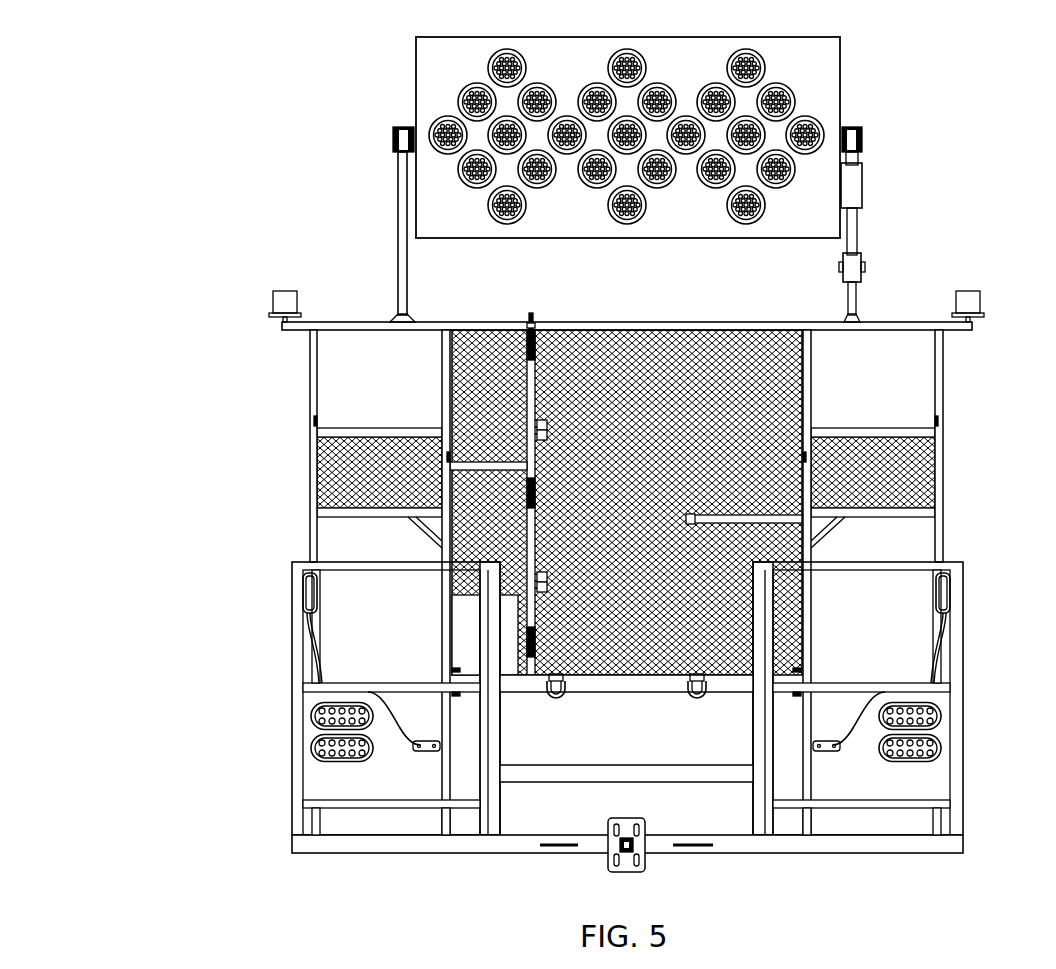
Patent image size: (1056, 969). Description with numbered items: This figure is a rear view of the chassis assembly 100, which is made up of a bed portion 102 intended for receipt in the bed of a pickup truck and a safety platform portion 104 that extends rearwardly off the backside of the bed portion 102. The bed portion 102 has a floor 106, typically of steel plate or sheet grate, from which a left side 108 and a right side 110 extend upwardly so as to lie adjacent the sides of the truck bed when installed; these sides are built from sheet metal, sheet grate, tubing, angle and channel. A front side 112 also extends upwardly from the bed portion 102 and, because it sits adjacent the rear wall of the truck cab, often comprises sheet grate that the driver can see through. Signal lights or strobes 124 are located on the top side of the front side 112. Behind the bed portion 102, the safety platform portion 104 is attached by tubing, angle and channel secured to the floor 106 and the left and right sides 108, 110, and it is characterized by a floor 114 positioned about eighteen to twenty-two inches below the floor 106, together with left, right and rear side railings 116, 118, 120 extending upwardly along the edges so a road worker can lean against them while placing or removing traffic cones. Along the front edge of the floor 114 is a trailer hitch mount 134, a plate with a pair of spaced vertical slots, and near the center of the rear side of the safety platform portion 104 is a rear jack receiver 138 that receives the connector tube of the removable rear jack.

The chassis assembly 100 is at (134, 100).
The bed portion 102 is at (242, 417).
The safety platform portion 104 is at (249, 720).
The floor 106 is at (655, 670).
The left side 108 is at (308, 528).
The right side 110 is at (945, 533).
The front side 112 is at (820, 67).
The floor 114 is at (714, 837).
The left side railing 116 is at (297, 646).
The right side railing 118 is at (957, 666).
The rear side railing 120 is at (488, 718).
The signal lights 124 is at (272, 297).
The trailer hitch mount 134 is at (627, 872).
The rear jack receiver 138 is at (618, 843).